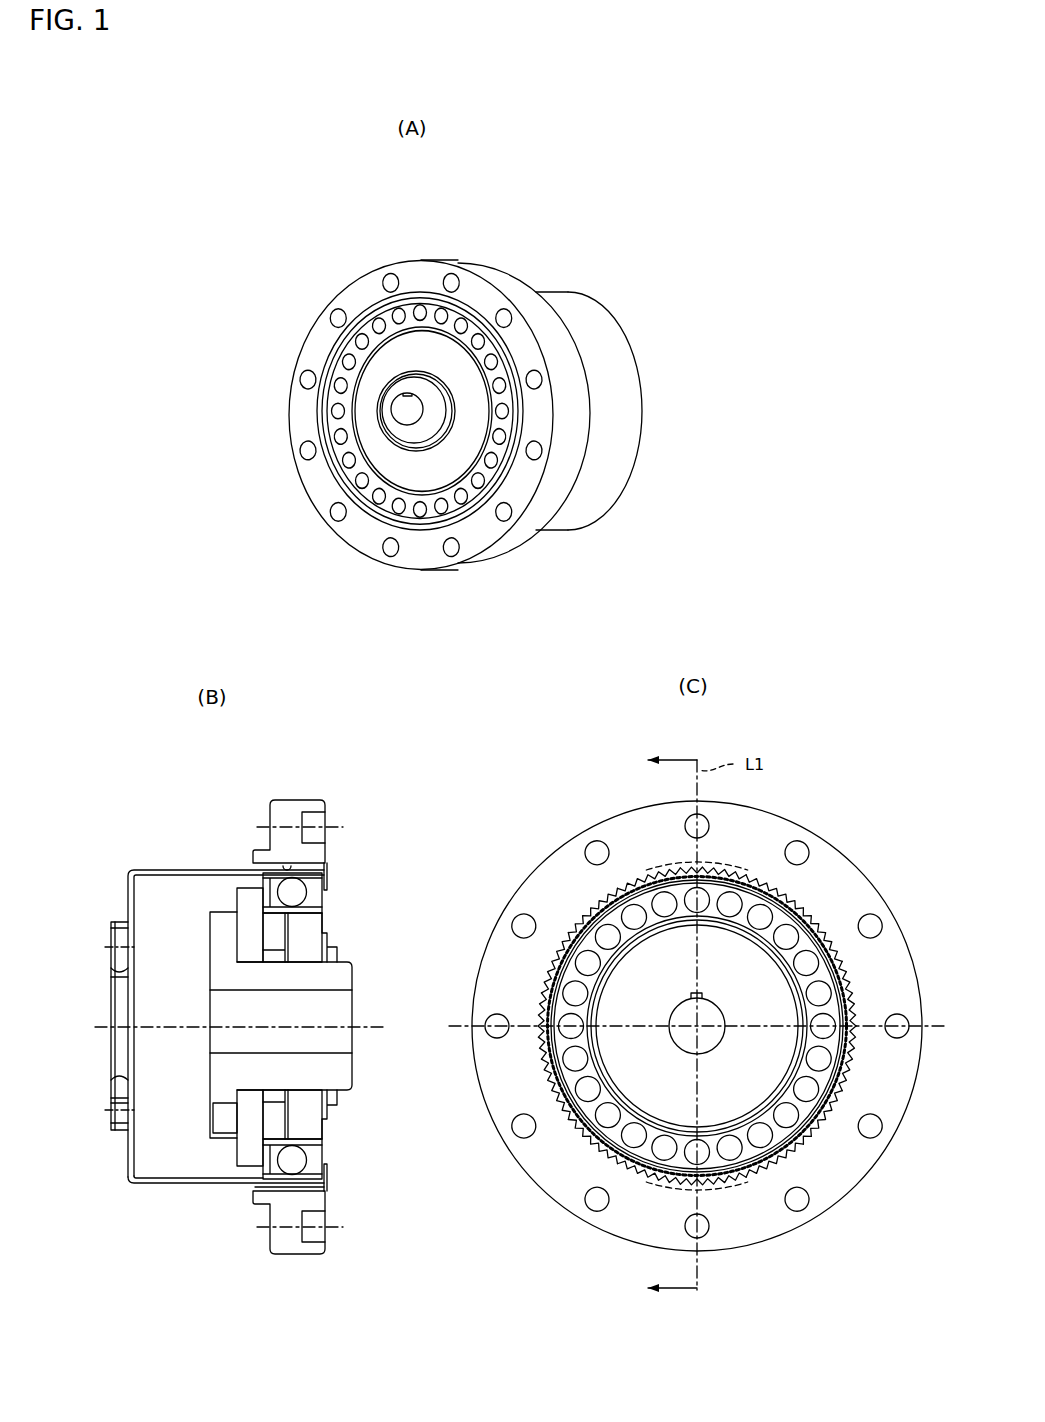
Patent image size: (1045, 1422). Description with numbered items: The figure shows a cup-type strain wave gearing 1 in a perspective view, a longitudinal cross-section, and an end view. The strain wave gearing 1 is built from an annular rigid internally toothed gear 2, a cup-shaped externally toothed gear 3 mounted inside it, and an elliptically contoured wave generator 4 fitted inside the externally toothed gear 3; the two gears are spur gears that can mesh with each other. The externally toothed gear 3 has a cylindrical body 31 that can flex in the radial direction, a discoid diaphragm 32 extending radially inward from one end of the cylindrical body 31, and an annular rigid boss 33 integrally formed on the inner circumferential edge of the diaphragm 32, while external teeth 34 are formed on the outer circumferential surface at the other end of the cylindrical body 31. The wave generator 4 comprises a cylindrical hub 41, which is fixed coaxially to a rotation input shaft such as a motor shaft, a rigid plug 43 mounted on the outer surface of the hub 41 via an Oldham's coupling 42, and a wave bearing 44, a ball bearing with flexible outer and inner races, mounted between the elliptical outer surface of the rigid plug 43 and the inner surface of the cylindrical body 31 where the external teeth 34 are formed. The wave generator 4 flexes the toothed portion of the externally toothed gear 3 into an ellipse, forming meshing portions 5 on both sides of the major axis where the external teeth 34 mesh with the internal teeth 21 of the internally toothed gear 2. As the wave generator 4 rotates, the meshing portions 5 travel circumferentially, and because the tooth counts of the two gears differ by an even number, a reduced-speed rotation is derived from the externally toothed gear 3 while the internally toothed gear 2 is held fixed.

The strain wave gearing 1 is at (516, 254).
The internally toothed gear 2 is at (433, 281).
The internal teeth 21 is at (582, 1135).
The externally toothed gear 3 is at (345, 318).
The cylindrical body 31 is at (195, 1184).
The diaphragm 32 is at (128, 1150).
The boss 33 is at (120, 1087).
The external teeth 34 is at (307, 1188).
The wave generator 4 is at (545, 770).
The hub 41 is at (337, 980).
The Oldham's coupling 42 is at (238, 1150).
The rigid plug 43 is at (303, 1130).
The wave bearing 44 is at (312, 1158).
The meshing portions 5 is at (715, 856).